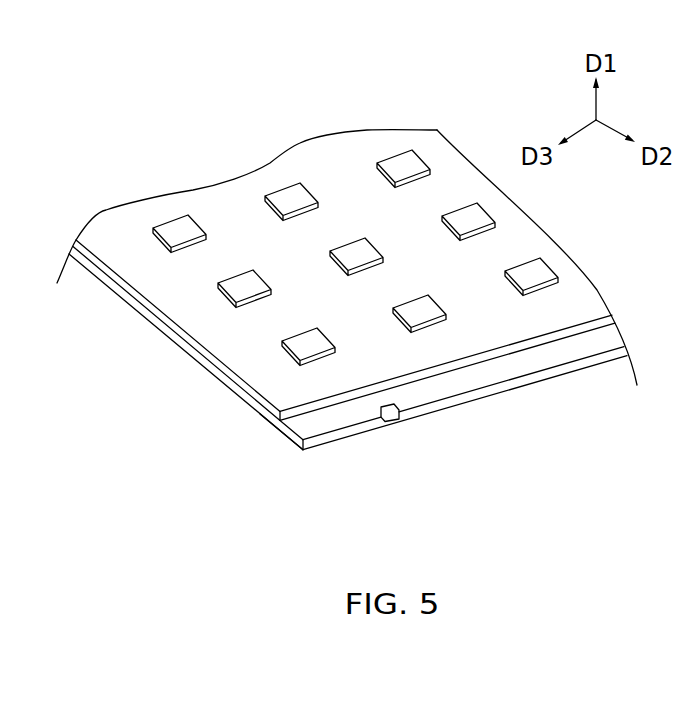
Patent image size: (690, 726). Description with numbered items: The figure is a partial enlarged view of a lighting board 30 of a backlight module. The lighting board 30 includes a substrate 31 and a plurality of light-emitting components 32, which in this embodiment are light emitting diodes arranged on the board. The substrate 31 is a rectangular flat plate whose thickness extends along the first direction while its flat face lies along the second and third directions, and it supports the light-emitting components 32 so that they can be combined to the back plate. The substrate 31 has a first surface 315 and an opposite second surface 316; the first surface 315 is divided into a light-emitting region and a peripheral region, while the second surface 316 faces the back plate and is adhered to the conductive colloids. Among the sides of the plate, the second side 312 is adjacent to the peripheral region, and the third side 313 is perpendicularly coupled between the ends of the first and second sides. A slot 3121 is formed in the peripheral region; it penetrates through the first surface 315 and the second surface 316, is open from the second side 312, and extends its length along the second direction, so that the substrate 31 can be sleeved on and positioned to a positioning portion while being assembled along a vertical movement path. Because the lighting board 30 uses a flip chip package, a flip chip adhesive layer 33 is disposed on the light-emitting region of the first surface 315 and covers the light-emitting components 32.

The lighting board 30 is at (345, 176).
The substrate 31 is at (348, 399).
The second side 312 is at (483, 399).
The slot 3121 is at (390, 433).
The third side 313 is at (150, 321).
The first surface 315 is at (315, 426).
The second surface 316 is at (272, 429).
The light-emitting components 32 is at (176, 228).
The flip chip adhesive layer 33 is at (108, 272).